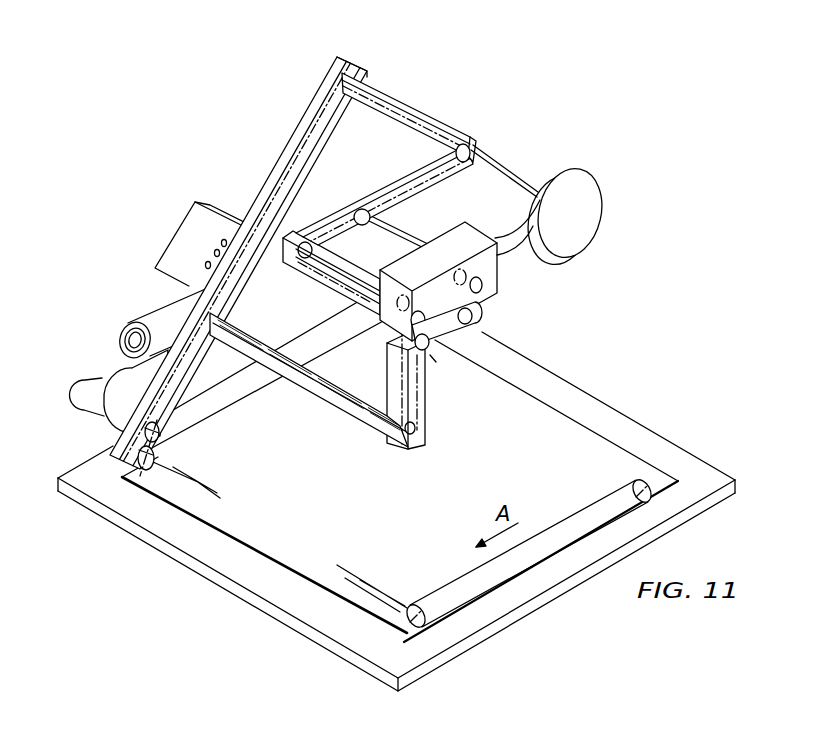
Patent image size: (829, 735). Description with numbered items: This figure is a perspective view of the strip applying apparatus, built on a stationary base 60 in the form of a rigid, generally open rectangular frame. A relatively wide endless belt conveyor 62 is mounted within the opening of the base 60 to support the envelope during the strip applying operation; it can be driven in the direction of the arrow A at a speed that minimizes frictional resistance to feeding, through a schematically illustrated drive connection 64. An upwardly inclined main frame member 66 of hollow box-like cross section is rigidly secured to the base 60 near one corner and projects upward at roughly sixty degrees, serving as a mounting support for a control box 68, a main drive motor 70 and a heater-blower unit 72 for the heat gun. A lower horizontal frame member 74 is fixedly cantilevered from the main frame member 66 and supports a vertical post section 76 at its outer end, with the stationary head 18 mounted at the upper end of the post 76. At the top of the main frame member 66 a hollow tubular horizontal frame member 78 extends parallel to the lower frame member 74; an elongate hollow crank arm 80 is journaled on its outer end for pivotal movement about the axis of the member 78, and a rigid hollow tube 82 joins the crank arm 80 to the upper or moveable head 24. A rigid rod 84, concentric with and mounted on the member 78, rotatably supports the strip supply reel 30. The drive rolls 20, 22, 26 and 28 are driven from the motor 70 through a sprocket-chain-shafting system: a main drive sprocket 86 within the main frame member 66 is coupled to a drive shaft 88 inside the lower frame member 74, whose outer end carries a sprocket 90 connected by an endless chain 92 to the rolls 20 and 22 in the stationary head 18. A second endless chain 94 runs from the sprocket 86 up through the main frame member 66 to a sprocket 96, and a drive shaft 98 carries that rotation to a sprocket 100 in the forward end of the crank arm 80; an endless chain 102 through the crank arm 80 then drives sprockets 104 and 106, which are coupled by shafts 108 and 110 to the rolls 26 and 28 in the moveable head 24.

The stationary head 18 is at (436, 362).
The drive roll 20 is at (430, 343).
The drive roll 22 is at (485, 306).
The upper or moveable head 24 is at (505, 228).
The drive roll 26 is at (446, 315).
The drive roll 28 is at (482, 282).
The strip supply reel 30 is at (596, 192).
The stationary base 60 is at (281, 611).
The endless belt conveyor 62 is at (444, 523).
The drive connection 64 is at (122, 462).
The main frame member 66 is at (288, 148).
The control box 68 is at (174, 248).
The main drive motor 70 is at (140, 322).
The heater-blower unit 72 is at (95, 407).
The lower horizontal frame member 74 is at (330, 413).
The vertical post section 76 is at (425, 432).
The hollow tubular horizontal frame member 78 is at (412, 104).
The crank arm 80 is at (378, 180).
The rigid hollow tube 82 is at (320, 282).
The rigid rod 84 is at (518, 182).
The main drive sprocket 86 is at (196, 352).
The drive shaft 88 is at (300, 392).
The sprocket 90 is at (408, 448).
The endless chain 92 is at (402, 378).
The second endless chain 94 is at (255, 214).
The sprocket 96 is at (345, 58).
The drive shaft 98 is at (372, 97).
The sprocket 100 is at (470, 146).
The endless chain 102 is at (382, 188).
The sprocket 104 is at (320, 242).
The sprocket 106 is at (362, 208).
The shaft 108 is at (355, 283).
The shaft 110 is at (392, 227).